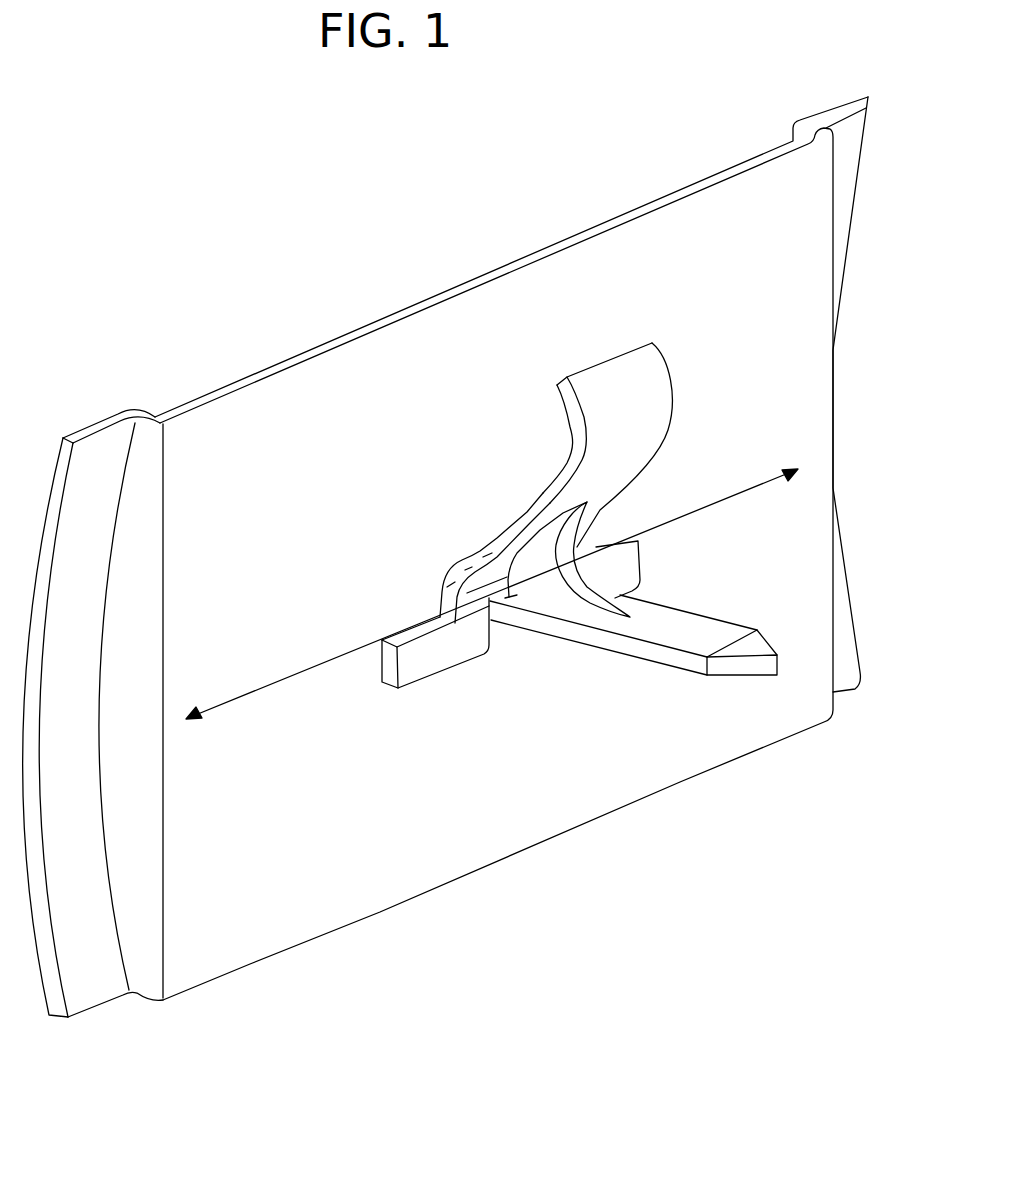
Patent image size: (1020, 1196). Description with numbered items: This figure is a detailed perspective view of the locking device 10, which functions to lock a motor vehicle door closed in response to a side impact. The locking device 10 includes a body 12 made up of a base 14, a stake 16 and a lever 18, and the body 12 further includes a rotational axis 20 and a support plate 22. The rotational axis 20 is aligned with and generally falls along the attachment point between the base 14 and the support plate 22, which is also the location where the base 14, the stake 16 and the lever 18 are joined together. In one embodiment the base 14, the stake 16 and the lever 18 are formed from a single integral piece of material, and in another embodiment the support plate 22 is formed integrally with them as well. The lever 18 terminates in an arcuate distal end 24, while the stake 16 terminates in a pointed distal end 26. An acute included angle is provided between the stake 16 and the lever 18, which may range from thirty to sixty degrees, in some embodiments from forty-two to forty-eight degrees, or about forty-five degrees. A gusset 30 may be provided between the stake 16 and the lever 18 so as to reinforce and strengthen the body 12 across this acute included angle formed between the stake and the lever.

The locking device 10 is at (309, 224).
The body 12 is at (640, 545).
The base 14 is at (432, 653).
The stake 16 is at (672, 630).
The lever 18 is at (547, 498).
The rotational axis 20 is at (280, 678).
The support plate 22 is at (240, 920).
The arcuate distal end 24 is at (663, 411).
The pointed distal end 26 is at (747, 670).
The gusset 30 is at (550, 592).